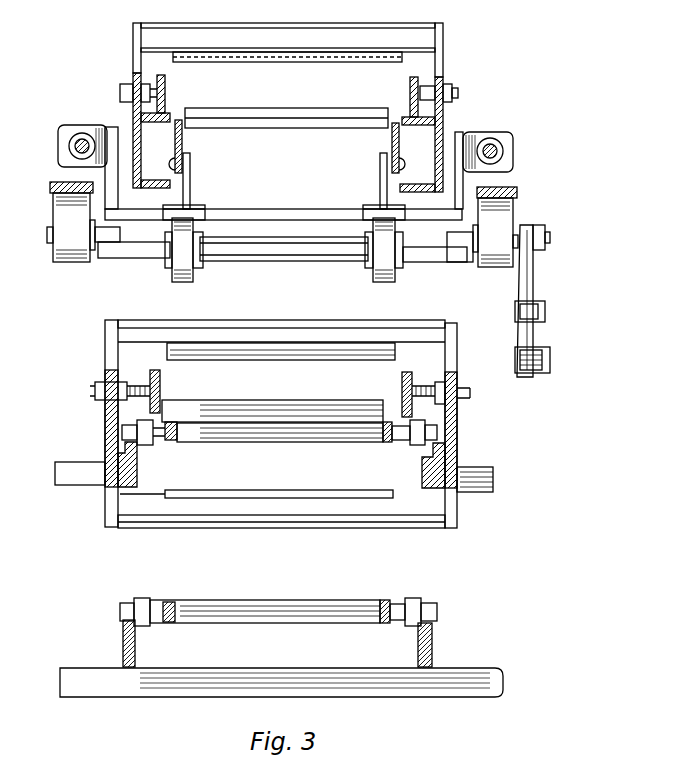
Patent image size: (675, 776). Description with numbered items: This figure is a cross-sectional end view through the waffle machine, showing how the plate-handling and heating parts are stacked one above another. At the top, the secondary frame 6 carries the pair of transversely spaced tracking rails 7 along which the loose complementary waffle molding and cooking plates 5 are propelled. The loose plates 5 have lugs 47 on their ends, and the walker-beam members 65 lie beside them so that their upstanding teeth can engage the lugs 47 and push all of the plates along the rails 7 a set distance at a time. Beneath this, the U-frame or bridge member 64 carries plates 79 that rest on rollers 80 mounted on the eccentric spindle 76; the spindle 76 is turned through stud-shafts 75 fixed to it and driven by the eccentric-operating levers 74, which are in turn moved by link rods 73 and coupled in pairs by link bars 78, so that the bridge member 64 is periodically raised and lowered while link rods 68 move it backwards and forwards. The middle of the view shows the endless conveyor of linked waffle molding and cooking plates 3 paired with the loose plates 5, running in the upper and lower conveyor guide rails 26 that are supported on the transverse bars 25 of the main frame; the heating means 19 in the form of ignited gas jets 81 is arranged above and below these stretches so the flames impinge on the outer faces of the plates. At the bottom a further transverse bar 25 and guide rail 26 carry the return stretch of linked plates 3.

The waffle molding and cooking plates 3 is at (273, 440).
The loose complementary waffle molding and cooking plates 5 is at (207, 118).
The secondary frame 6 is at (458, 92).
The tracking rails 7 is at (132, 115).
The heating means 19 is at (294, 326).
The transverse bars 25 is at (73, 472).
The conveyor guide rails 26 is at (125, 445).
The lugs 47 is at (177, 110).
The U-frame or bridge member 64 is at (244, 210).
The walker-beam members 65 is at (183, 139).
The link rods 68 is at (82, 143).
The link rods 73 is at (545, 311).
The eccentric-operating levers 74 is at (533, 288).
The stud-shafts 75 is at (108, 240).
The eccentric spindle 76 is at (143, 254).
The link bars 78 is at (542, 349).
The plates 79 is at (208, 211).
The rollers 80 is at (178, 282).
The ignited gas jets 81 is at (268, 358).